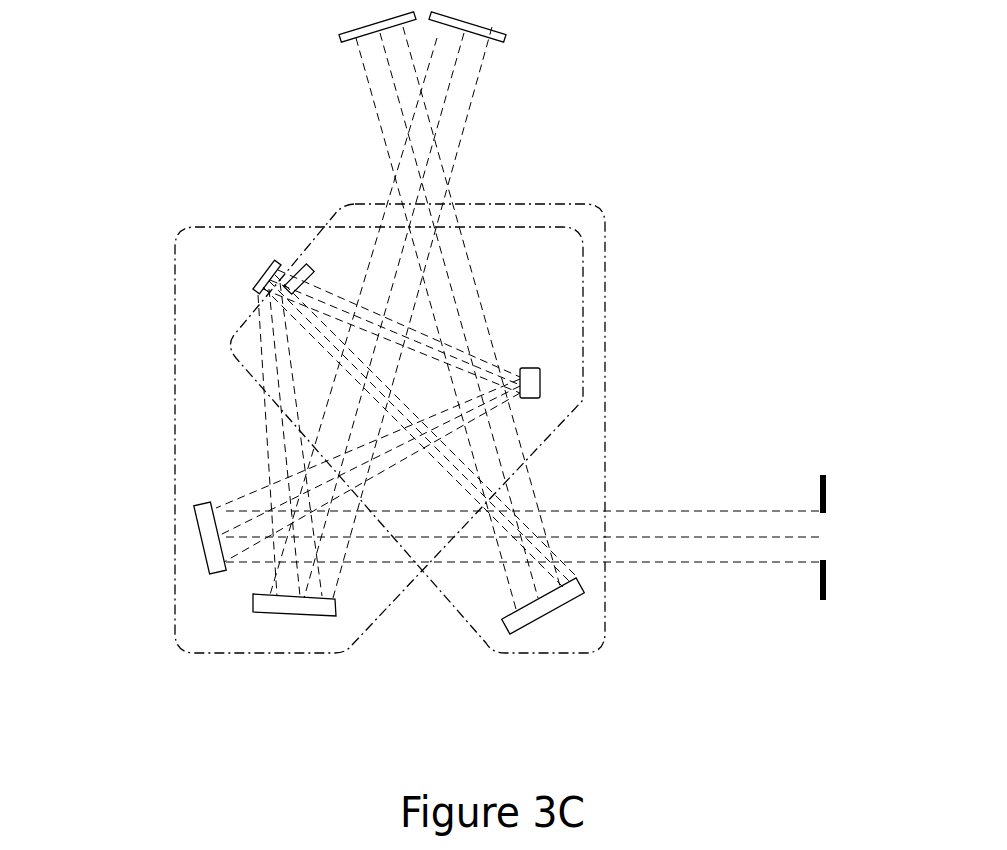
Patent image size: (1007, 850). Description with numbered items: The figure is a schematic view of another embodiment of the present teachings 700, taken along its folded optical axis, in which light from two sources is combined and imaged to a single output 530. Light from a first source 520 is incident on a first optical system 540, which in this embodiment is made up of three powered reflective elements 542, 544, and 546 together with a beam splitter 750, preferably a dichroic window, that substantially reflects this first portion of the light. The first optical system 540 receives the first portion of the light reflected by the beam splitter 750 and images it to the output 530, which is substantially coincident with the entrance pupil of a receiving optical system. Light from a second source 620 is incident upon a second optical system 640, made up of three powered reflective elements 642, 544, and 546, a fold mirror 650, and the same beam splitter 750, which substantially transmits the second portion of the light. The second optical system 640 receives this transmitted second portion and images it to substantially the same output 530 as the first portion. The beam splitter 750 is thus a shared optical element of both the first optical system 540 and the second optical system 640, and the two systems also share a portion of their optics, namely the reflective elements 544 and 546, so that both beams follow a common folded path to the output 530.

The embodiment of the present teachings 700 is at (126, 78).
The first source 520 is at (340, 40).
The second source 620 is at (505, 40).
The beam splitter 750 is at (302, 262).
The first optical system 540 is at (600, 210).
The second optical system 640 is at (178, 238).
The fold mirror 650 is at (254, 289).
The powered reflective element 544 is at (541, 385).
The powered reflective element 546 is at (203, 540).
The powered reflective element 642 is at (296, 616).
The powered reflective element 542 is at (540, 636).
The output 530 is at (823, 600).